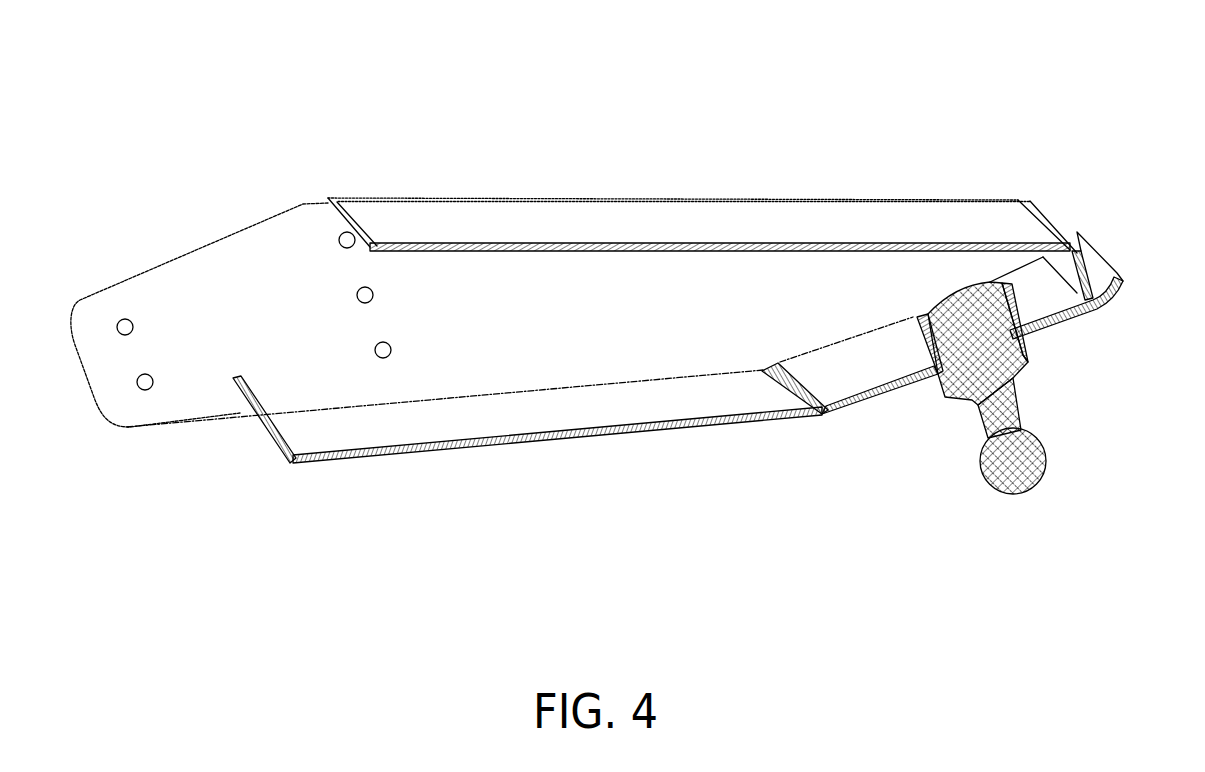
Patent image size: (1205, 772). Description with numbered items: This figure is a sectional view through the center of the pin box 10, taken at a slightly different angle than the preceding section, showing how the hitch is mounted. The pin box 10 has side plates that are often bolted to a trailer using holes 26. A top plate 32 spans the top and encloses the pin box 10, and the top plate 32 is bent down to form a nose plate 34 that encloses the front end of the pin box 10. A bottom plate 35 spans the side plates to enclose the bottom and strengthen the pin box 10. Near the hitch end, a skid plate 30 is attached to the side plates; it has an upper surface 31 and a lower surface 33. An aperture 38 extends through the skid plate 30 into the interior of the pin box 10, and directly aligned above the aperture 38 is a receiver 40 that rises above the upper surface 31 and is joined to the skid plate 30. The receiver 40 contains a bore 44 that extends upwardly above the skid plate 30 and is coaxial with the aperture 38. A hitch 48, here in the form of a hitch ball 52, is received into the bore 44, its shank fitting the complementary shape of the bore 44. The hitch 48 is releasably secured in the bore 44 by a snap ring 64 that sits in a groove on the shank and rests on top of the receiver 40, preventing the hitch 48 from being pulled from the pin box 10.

The pin box 10 is at (797, 125).
The holes 26 is at (121, 323).
The top plate 32 is at (523, 213).
The nose plate 34 is at (1071, 232).
The skid plate 30 is at (850, 402).
The bottom plate 35 is at (392, 432).
The upper surface 31 is at (838, 389).
The lower surface 33 is at (897, 387).
The snap ring 64 is at (913, 314).
The aperture 38 is at (948, 467).
The receiver 40 is at (1013, 305).
The bore 44 is at (933, 352).
The hitch ball 52 is at (937, 540).
The hitch 48 is at (1007, 493).